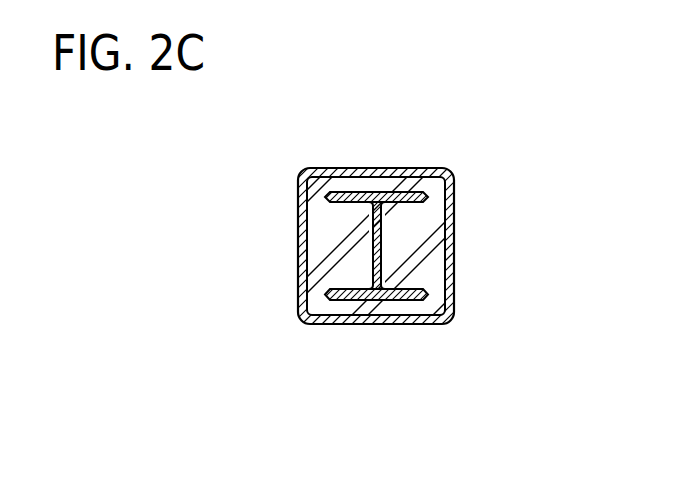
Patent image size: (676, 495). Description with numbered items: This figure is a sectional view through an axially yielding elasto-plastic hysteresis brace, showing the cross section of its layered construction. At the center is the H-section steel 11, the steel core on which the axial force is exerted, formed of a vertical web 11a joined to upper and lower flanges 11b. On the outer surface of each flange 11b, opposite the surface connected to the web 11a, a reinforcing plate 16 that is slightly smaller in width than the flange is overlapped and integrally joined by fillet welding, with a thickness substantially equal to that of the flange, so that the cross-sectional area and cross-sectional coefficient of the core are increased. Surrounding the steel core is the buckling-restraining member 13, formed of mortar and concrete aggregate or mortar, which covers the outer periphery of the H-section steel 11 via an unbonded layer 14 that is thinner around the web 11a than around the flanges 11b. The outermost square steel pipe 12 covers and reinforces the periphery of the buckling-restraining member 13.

The H-section steel 11 is at (380, 245).
The web 11a is at (383, 214).
The flanges 11b is at (430, 197).
The square steel pipe 12 is at (340, 325).
The buckling-restraining member 13 is at (432, 260).
The unbonded layer 14 is at (347, 192).
The reinforcing plates 16 is at (400, 192).